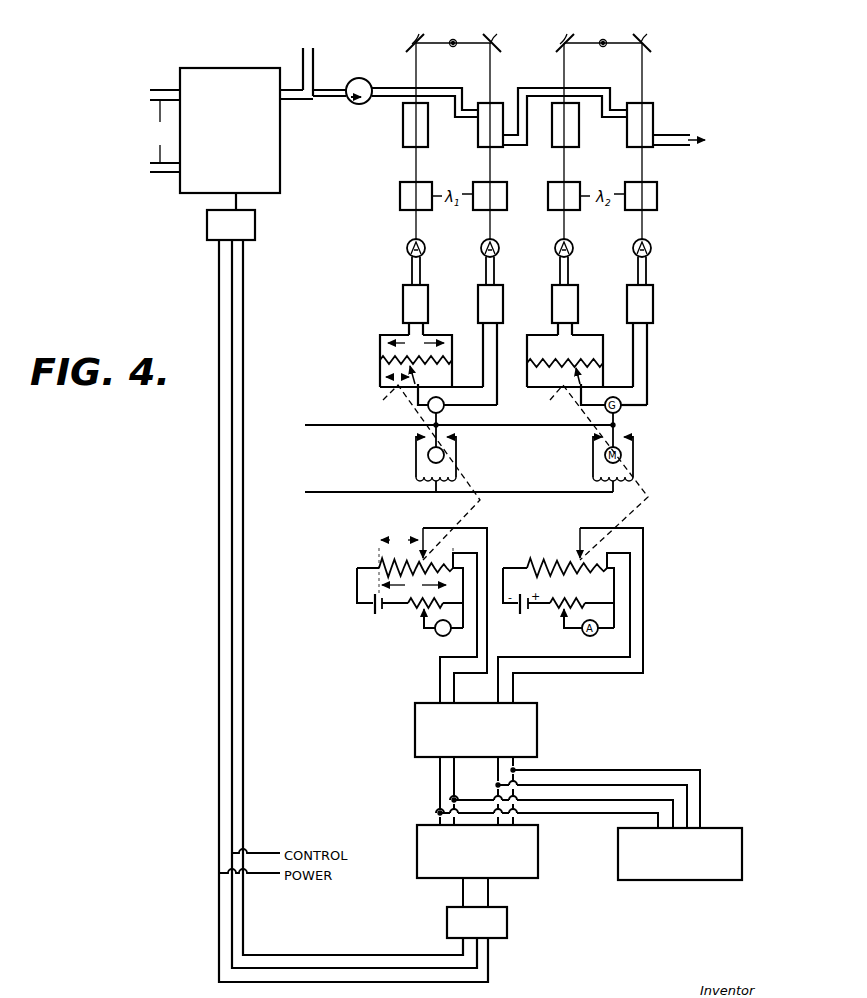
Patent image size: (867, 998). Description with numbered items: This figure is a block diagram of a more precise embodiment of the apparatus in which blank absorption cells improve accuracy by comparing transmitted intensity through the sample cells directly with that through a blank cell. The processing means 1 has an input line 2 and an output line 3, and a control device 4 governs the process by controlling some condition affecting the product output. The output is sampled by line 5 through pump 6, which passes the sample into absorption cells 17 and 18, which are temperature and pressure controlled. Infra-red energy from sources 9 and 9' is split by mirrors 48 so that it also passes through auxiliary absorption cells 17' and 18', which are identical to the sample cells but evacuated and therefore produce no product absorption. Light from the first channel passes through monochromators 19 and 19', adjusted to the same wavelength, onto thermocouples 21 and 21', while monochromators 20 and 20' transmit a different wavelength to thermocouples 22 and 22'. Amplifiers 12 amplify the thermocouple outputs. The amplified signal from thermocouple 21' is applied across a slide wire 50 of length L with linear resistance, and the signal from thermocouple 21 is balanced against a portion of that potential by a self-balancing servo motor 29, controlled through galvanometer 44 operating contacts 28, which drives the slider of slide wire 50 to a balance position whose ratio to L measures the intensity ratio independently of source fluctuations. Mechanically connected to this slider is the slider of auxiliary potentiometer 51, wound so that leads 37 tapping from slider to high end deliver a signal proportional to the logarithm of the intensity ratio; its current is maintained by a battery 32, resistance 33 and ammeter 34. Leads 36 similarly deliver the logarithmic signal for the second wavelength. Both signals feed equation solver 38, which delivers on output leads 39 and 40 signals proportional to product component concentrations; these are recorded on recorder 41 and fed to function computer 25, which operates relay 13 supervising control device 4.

The processing means 1 is at (236, 68).
The input line 2 is at (158, 131).
The output line 3 is at (313, 58).
The control device 4 is at (207, 222).
The sampling line 5 is at (318, 104).
The pump 6 is at (355, 104).
The infra-red source 9 is at (602, 28).
The infra-red source 9' is at (449, 29).
The amplifier 12 is at (428, 302).
The relay 13 is at (507, 921).
The absorption cell 17 is at (475, 127).
The auxiliary absorption cell 17' is at (397, 129).
The absorption cell 18 is at (624, 132).
The auxiliary absorption cell 18' is at (549, 135).
The monochromator 19 is at (481, 185).
The monochromator 19' is at (398, 194).
The monochromator 20 is at (629, 185).
The monochromator 20' is at (549, 187).
The thermocouple 21 is at (477, 262).
The thermocouple 21' is at (400, 262).
The thermocouple 22 is at (628, 262).
The thermocouple 22' is at (548, 262).
The function computer 25 is at (417, 851).
The contacts 28 is at (448, 436).
The servo motor 29 is at (444, 454).
The battery 32 is at (376, 616).
The resistance 33 is at (420, 612).
The ammeter 34 is at (437, 636).
The leads 36 is at (508, 684).
The leads 37 is at (482, 541).
The equation solver 38 is at (539, 730).
The output lead 39 is at (514, 768).
The output lead 40 is at (443, 765).
The recorder 41 is at (738, 826).
The galvanometer 44 is at (445, 403).
The mirror 48 is at (414, 40).
The slide wire 50 is at (380, 349).
The auxiliary potentiometer 51 is at (375, 565).